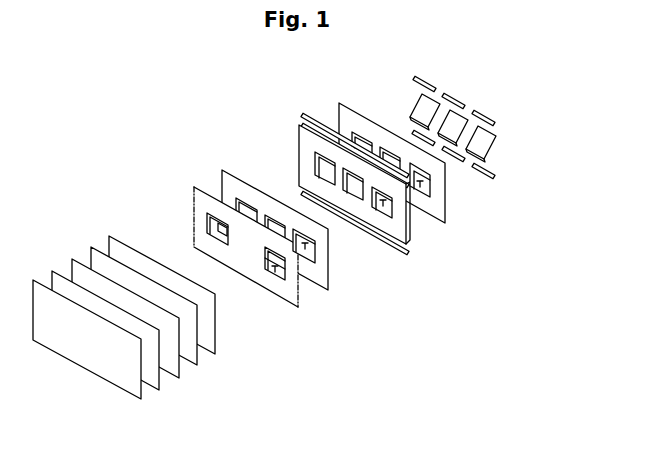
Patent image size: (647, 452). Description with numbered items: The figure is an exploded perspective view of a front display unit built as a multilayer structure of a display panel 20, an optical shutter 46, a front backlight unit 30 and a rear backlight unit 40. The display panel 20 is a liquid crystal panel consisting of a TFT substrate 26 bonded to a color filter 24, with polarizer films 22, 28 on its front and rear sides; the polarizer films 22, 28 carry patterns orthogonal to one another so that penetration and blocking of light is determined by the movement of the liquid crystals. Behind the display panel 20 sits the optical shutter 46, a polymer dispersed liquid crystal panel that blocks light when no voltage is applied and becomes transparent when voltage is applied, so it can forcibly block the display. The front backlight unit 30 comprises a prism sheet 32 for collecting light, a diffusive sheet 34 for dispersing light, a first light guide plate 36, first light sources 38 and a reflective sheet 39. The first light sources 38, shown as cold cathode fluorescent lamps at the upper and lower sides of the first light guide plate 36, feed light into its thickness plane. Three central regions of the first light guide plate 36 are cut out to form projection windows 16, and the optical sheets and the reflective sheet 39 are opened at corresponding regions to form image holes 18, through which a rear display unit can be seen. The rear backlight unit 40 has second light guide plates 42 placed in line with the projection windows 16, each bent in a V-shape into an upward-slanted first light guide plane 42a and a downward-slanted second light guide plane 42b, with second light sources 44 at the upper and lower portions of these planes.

The projection window 16 is at (382, 206).
The image hole 18 is at (421, 188).
The display panel 20 is at (108, 305).
The polarizer film 22 is at (34, 279).
The color filter 24 is at (52, 270).
The TFT substrate 26 is at (72, 258).
The polarizer film 28 is at (91, 246).
The front backlight unit 30 is at (317, 187).
The prism sheet 32 is at (204, 185).
The diffusive sheet 34 is at (233, 170).
The first light guide plate 36 is at (298, 127).
The first light source 38 is at (308, 114).
The reflective sheet 39 is at (337, 106).
The rear backlight unit 40 is at (473, 125).
The second light guide plate 42 is at (477, 118).
The first light guide plane 42a is at (496, 137).
The second light guide plane 42b is at (493, 163).
The second light source 44 is at (414, 79).
The optical shutter 46 is at (118, 238).